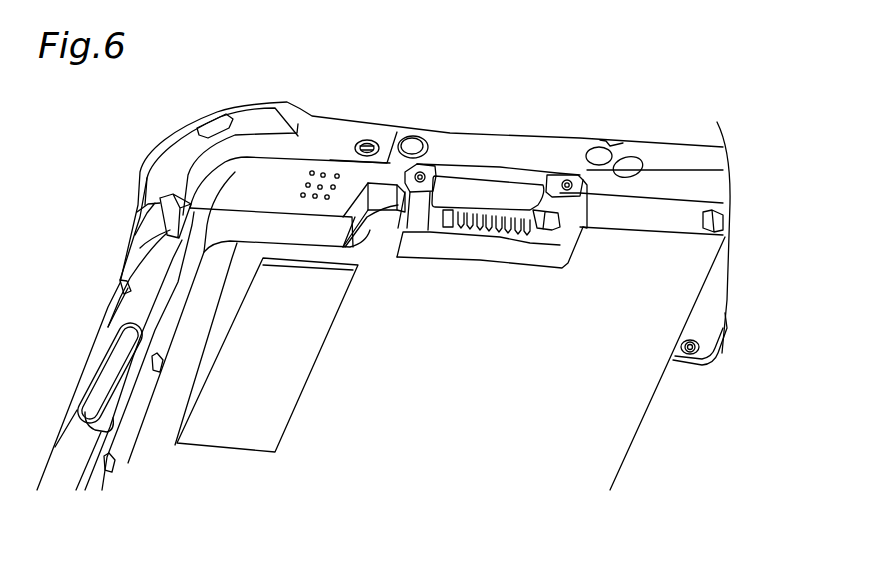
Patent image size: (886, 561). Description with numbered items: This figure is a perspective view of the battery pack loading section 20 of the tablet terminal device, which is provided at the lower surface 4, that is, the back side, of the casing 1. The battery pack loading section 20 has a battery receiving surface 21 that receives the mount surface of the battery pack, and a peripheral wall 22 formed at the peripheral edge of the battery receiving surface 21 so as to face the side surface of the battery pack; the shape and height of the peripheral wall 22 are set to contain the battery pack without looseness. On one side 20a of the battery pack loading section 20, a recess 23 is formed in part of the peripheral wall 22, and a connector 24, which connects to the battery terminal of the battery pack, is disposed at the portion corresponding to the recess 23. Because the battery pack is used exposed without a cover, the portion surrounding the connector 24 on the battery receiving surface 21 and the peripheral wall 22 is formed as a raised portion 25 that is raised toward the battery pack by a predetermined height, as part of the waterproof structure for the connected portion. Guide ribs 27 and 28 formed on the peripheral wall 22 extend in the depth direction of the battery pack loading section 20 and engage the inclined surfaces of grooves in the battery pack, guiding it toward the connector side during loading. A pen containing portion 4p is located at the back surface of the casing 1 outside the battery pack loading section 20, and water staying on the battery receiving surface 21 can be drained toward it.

The casing 1 is at (55, 452).
The lower surface 4 is at (443, 148).
The pen containing portion 4p is at (125, 318).
The battery pack loading section 20 is at (631, 344).
The one side of the battery pack loading section 20a is at (658, 213).
The battery receiving surface 21 is at (600, 442).
The peripheral wall 22 is at (257, 228).
The recess 23 is at (546, 223).
The connector 24 is at (500, 228).
The raised portion 25 is at (452, 248).
The guide rib 27 is at (155, 368).
The guide rib 28 is at (110, 470).